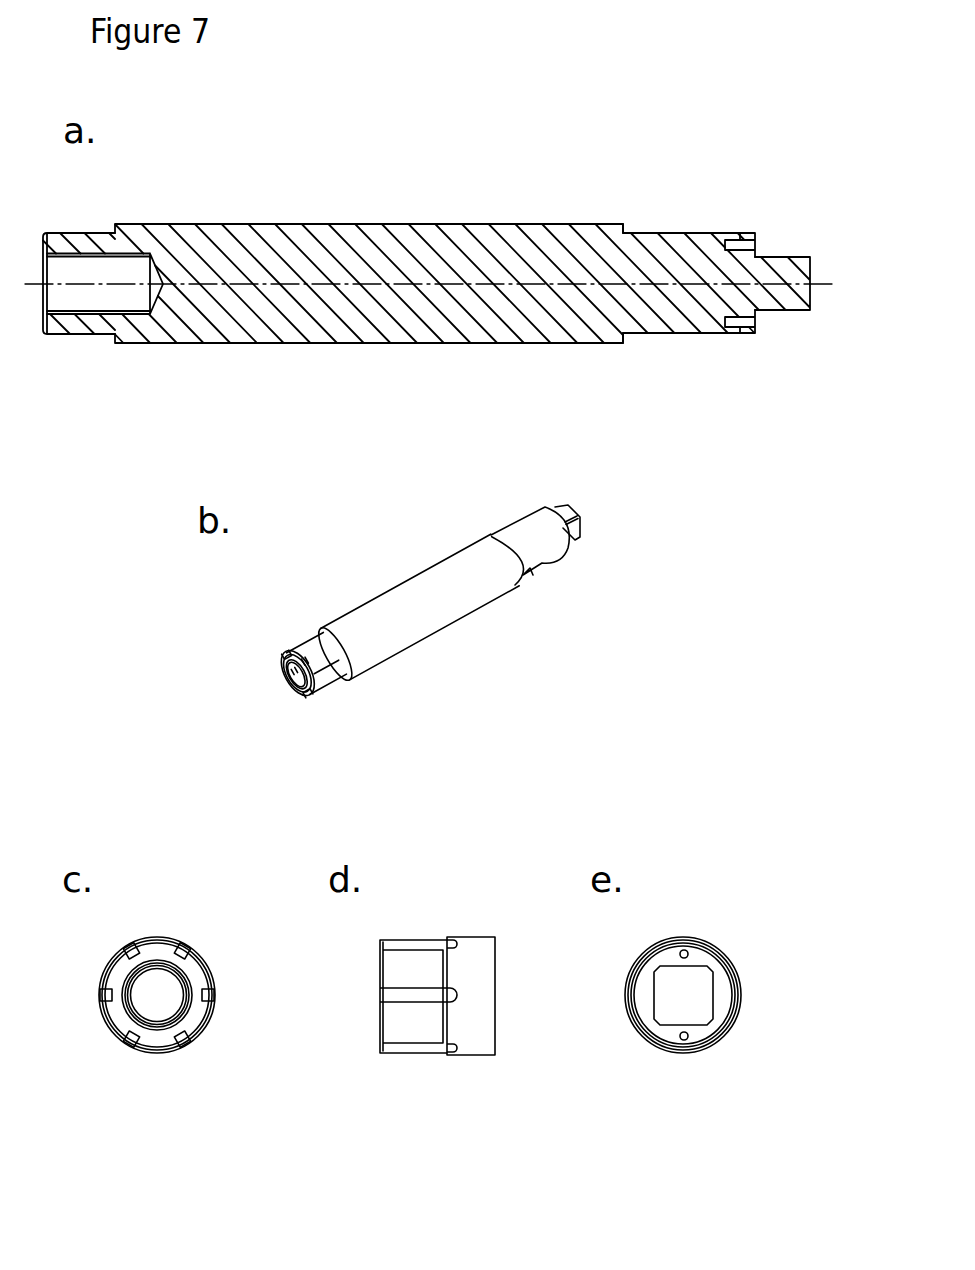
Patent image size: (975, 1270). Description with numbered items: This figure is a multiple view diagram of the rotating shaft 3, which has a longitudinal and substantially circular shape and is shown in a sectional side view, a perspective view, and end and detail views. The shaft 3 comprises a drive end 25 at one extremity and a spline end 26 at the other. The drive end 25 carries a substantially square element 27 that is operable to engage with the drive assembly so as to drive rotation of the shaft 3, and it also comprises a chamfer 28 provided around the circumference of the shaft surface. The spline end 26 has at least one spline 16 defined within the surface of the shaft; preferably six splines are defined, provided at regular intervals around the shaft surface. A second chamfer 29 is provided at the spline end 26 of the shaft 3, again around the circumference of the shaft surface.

The rotating shaft 3 is at (490, 240).
The spline 16 is at (210, 995).
The drive end 25 is at (778, 273).
The spline end 26 is at (93, 240).
The square element 27 is at (780, 300).
The chamfer 28 is at (627, 230).
The second chamfer 29 is at (105, 337).